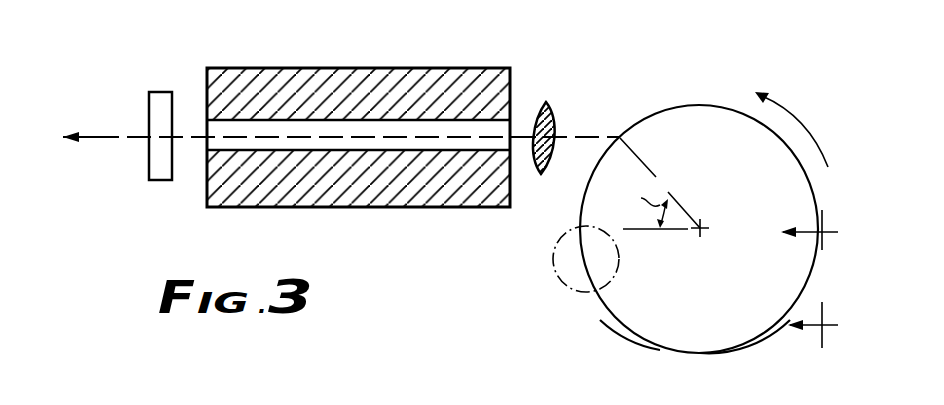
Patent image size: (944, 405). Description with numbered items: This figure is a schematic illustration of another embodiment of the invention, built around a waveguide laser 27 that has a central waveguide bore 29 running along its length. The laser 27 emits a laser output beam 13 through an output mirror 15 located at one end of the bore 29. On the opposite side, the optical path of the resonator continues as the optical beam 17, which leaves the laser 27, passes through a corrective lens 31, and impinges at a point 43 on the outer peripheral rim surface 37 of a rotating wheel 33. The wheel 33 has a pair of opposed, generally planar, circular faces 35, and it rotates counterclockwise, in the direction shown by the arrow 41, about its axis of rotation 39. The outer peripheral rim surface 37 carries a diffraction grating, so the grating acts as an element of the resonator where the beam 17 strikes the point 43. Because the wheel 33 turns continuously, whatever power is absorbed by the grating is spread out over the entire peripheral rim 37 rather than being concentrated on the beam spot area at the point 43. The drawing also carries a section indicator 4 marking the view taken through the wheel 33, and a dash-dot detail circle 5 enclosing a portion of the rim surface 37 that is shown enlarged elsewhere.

The section line 4- 4 is at (819, 279).
The detail region of FIG. 5 is at (556, 282).
The laser output beam 13 is at (122, 116).
The output mirror 15 is at (160, 92).
The optical beam 17 is at (579, 118).
The waveguide laser 27 is at (369, 47).
The central waveguide bore 29 is at (418, 143).
The corrective lens 31 is at (547, 102).
The rotating wheel 33 is at (683, 302).
The circular faces 35 is at (765, 327).
The outer peripheral rim surface 37 is at (622, 327).
The axis of rotation 39 is at (703, 226).
The arrow 41 is at (806, 97).
The point 43 is at (620, 138).